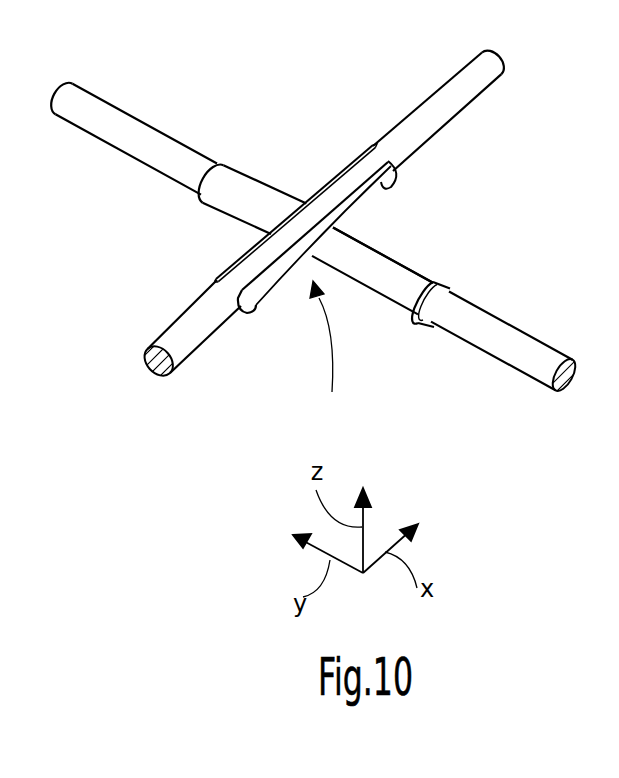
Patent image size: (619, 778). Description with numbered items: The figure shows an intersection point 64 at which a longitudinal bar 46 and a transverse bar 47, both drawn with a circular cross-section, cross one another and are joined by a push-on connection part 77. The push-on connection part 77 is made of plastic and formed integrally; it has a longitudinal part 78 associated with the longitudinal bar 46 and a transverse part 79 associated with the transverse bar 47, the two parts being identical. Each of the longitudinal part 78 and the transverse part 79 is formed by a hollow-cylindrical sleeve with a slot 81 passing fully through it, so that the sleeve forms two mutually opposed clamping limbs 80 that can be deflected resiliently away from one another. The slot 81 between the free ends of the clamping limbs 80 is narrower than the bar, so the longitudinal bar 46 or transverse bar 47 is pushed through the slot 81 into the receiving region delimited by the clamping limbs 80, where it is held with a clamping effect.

The longitudinal bar 46 is at (180, 353).
The transverse bar 47 is at (515, 361).
The intersection point 64 is at (329, 349).
The push-on connection part 77 is at (373, 162).
The longitudinal part 78 is at (397, 178).
The transverse part 79 is at (411, 267).
The clamping limbs 80 is at (233, 258).
The slot 81 is at (341, 172).